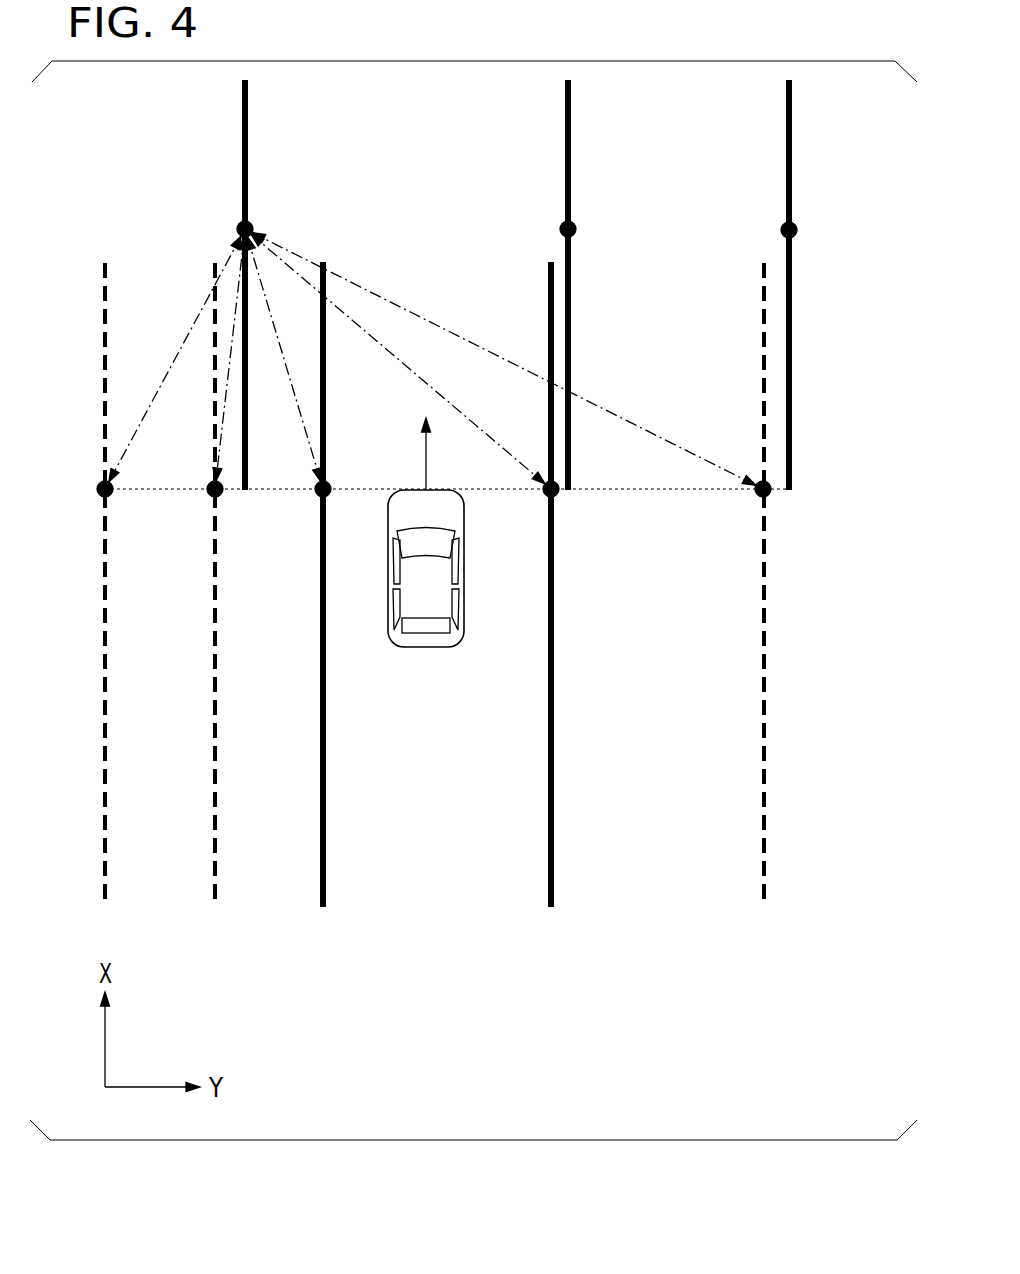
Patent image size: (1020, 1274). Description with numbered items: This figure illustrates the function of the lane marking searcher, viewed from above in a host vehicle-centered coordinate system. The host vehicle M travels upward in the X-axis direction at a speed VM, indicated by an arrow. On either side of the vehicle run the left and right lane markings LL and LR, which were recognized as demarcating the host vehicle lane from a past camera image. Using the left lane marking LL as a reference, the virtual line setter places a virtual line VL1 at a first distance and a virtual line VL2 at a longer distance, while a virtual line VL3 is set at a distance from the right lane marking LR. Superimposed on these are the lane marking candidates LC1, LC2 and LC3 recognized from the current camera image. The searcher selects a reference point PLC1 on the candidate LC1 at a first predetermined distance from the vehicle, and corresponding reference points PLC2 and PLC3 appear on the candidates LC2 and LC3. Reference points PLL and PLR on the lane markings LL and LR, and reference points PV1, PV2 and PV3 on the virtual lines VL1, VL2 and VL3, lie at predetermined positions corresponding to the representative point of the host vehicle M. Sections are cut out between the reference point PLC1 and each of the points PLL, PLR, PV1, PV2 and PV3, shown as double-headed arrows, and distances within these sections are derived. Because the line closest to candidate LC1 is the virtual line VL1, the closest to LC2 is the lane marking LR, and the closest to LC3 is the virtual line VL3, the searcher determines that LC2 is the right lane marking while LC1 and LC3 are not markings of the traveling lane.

The lane marking candidate LC1 is at (248, 97).
The lane marking candidate LC2 is at (571, 97).
The lane marking candidate LC3 is at (792, 99).
The reference point PLC1 is at (251, 225).
The reference point PLC2 is at (577, 229).
The reference point PLC3 is at (798, 230).
The reference point PV1 is at (210, 495).
The reference point PV2 is at (100, 495).
The reference point PV3 is at (768, 495).
The reference point PLL is at (318, 495).
The reference point PLR is at (556, 495).
The speed VM is at (424, 458).
The host vehicle M is at (465, 569).
The virtual line VL1 is at (218, 822).
The virtual line VL2 is at (108, 822).
The virtual line VL3 is at (767, 822).
The left lane marking LL is at (326, 823).
The right lane marking LR is at (554, 823).